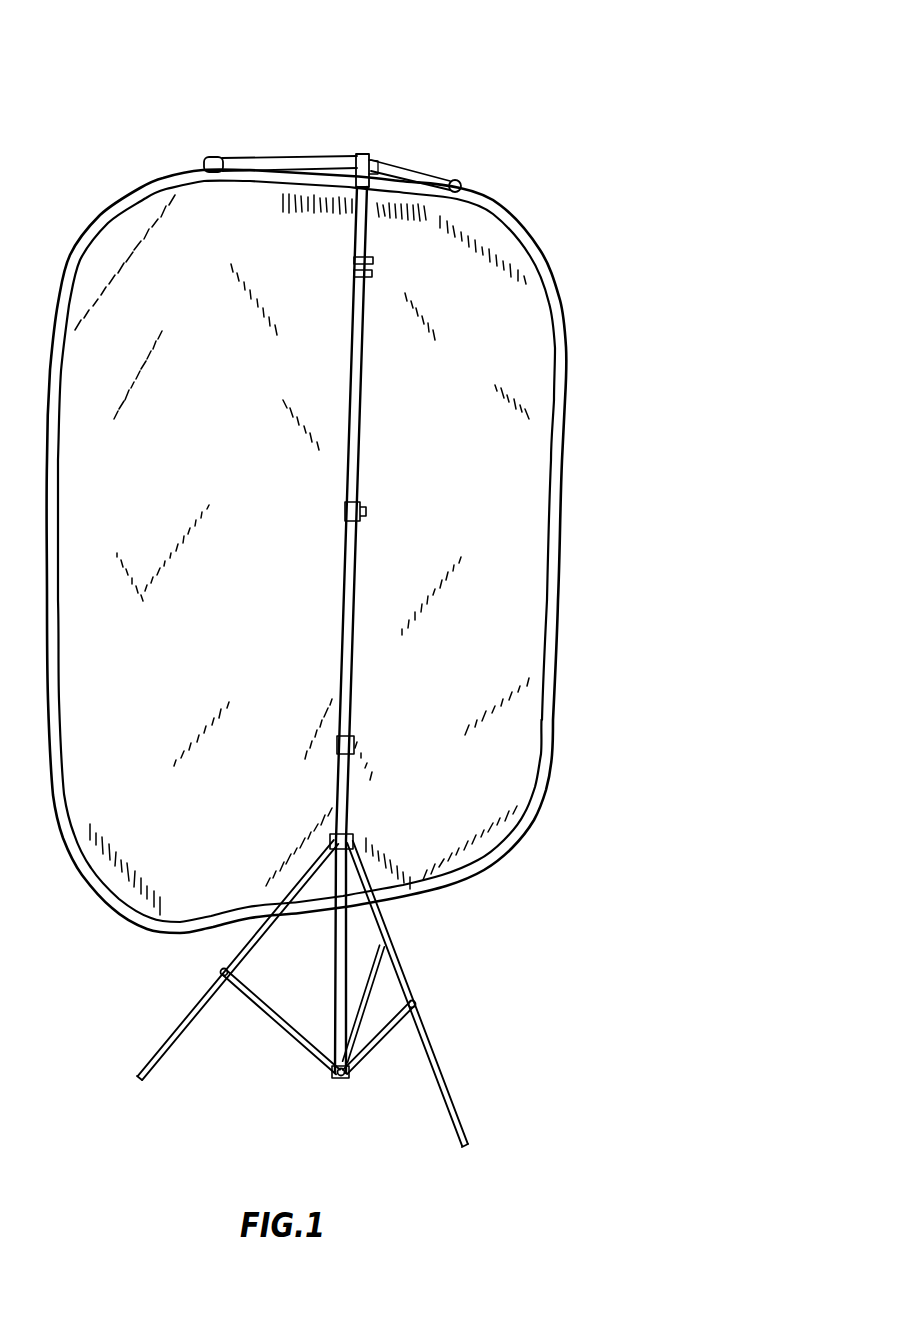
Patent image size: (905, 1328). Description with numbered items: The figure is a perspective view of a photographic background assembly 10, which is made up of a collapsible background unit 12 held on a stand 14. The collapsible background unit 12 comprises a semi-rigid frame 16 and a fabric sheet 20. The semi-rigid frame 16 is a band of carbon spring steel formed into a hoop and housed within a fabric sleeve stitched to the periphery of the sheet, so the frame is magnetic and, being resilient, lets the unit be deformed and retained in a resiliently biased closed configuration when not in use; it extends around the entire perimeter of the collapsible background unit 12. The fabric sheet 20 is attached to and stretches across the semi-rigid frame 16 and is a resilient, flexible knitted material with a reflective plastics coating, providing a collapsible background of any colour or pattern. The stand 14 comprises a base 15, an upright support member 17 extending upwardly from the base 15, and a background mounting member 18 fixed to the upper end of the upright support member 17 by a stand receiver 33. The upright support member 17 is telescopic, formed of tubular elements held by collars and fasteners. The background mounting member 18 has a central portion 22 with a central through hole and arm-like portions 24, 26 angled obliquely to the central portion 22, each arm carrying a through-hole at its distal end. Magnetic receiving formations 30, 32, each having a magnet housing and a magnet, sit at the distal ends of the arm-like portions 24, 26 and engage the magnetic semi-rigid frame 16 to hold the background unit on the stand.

The photographic background assembly 10 is at (552, 170).
The collapsible background unit 12 is at (604, 497).
The stand 14 is at (480, 970).
The base 15 is at (452, 1093).
The semi-rigid frame 16 is at (558, 708).
The upright support member 17 is at (362, 392).
The background mounting member 18 is at (231, 80).
The fabric sheet 20 is at (528, 598).
The central portion 22 is at (382, 157).
The arm-like portion 24 is at (425, 170).
The arm-like portion 26 is at (290, 157).
The magnetic receiving formation 30 is at (215, 158).
The magnetic receiving formation 32 is at (457, 178).
The stand receiver 33 is at (362, 155).